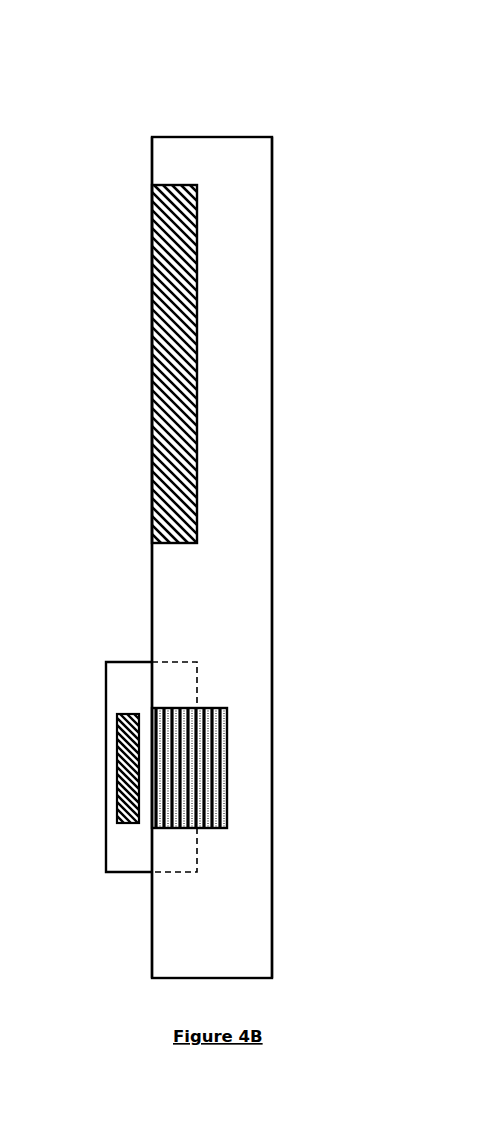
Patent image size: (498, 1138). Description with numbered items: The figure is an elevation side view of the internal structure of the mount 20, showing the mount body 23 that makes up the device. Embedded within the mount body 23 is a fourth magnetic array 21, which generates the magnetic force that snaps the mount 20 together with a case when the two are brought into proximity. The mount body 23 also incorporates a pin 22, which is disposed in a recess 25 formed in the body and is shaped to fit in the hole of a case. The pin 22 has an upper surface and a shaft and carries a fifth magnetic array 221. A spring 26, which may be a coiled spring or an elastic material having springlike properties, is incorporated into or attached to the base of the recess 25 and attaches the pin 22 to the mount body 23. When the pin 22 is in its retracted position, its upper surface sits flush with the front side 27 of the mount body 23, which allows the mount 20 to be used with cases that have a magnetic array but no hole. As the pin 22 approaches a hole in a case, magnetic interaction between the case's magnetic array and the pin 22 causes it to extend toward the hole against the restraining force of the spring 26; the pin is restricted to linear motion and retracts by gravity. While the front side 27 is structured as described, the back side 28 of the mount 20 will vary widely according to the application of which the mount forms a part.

The mount 20 is at (192, 137).
The fourth magnetic array 21 is at (163, 322).
The pin 22 is at (105, 748).
The fifth magnetic array 221 is at (133, 725).
The mount body 23 is at (213, 573).
The recess 25 is at (176, 673).
The spring 26 is at (225, 750).
The front side 27 is at (152, 590).
The back side 28 is at (272, 443).